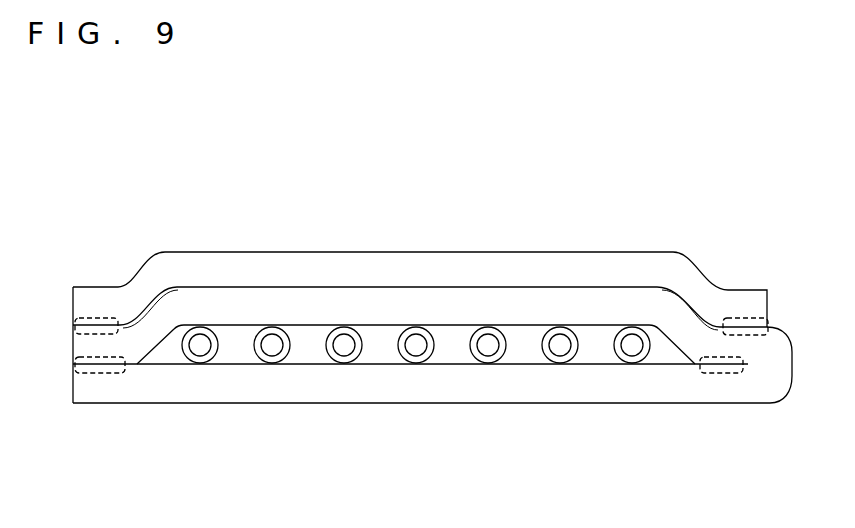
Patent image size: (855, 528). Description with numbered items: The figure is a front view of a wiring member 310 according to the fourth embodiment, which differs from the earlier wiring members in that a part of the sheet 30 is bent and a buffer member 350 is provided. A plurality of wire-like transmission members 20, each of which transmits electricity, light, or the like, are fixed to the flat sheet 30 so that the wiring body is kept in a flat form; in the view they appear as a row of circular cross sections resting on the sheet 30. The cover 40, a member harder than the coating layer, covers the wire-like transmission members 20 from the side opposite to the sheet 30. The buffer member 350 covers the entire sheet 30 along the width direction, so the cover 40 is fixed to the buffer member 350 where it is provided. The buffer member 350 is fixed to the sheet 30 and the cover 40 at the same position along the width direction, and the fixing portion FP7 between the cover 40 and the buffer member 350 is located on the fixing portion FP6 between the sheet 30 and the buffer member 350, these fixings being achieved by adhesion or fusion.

The wiring member 310 is at (133, 166).
The cover 40 is at (333, 263).
The buffer member 350 is at (445, 298).
The sheet 30 is at (450, 392).
The wire-like transmission member 20 is at (319, 366).
The fixing portion FP7 is at (92, 318).
The fixing portion FP6 is at (108, 373).